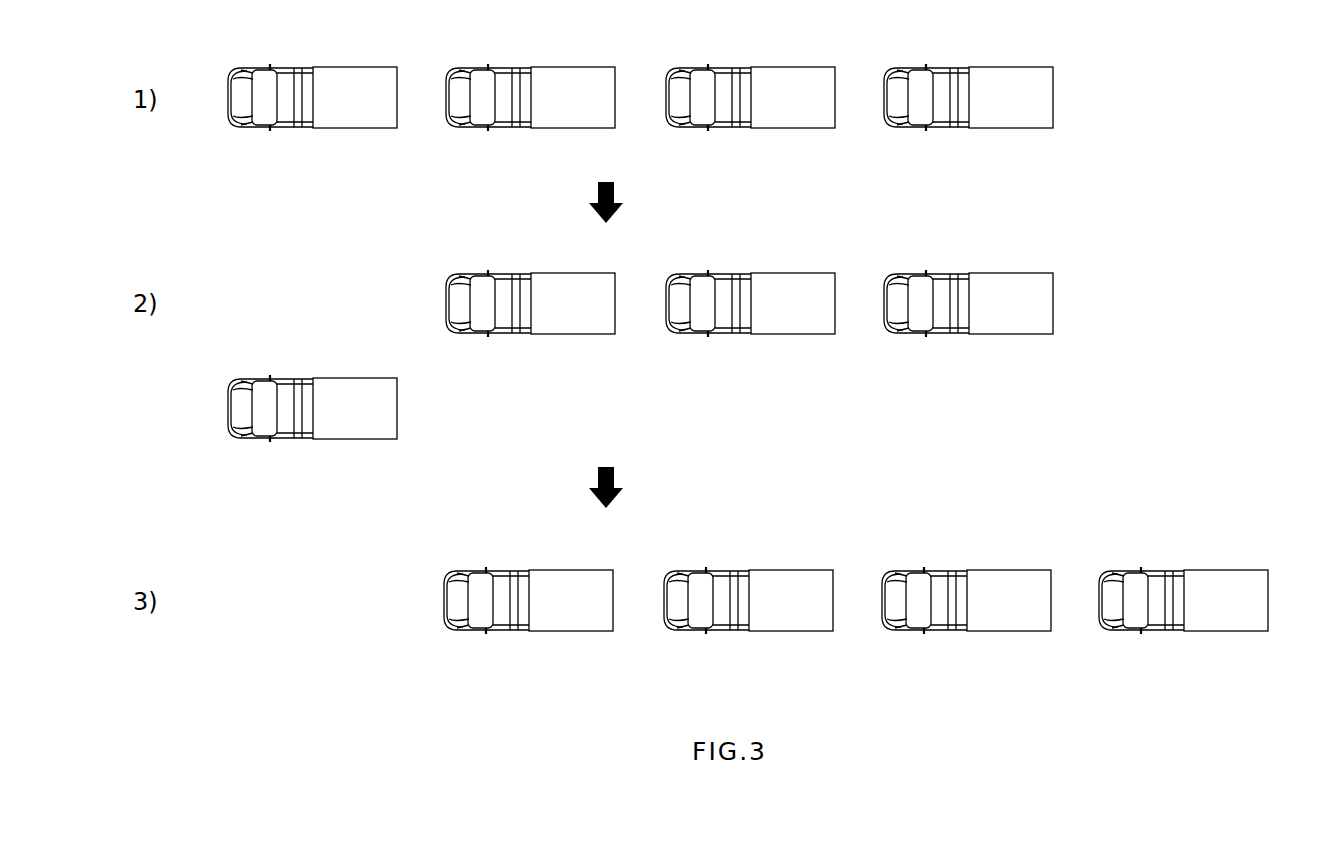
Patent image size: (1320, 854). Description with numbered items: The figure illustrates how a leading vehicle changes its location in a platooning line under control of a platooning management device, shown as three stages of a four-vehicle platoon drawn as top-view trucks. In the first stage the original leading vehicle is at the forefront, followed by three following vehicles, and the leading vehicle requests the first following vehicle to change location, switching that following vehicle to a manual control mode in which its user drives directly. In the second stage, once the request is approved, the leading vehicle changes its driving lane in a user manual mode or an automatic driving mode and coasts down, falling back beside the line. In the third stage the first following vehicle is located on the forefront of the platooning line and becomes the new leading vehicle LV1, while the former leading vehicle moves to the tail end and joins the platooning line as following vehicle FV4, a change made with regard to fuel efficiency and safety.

The new leading vehicle LV1 is at (528, 584).
The following vehicle FV4 is at (1183, 584).